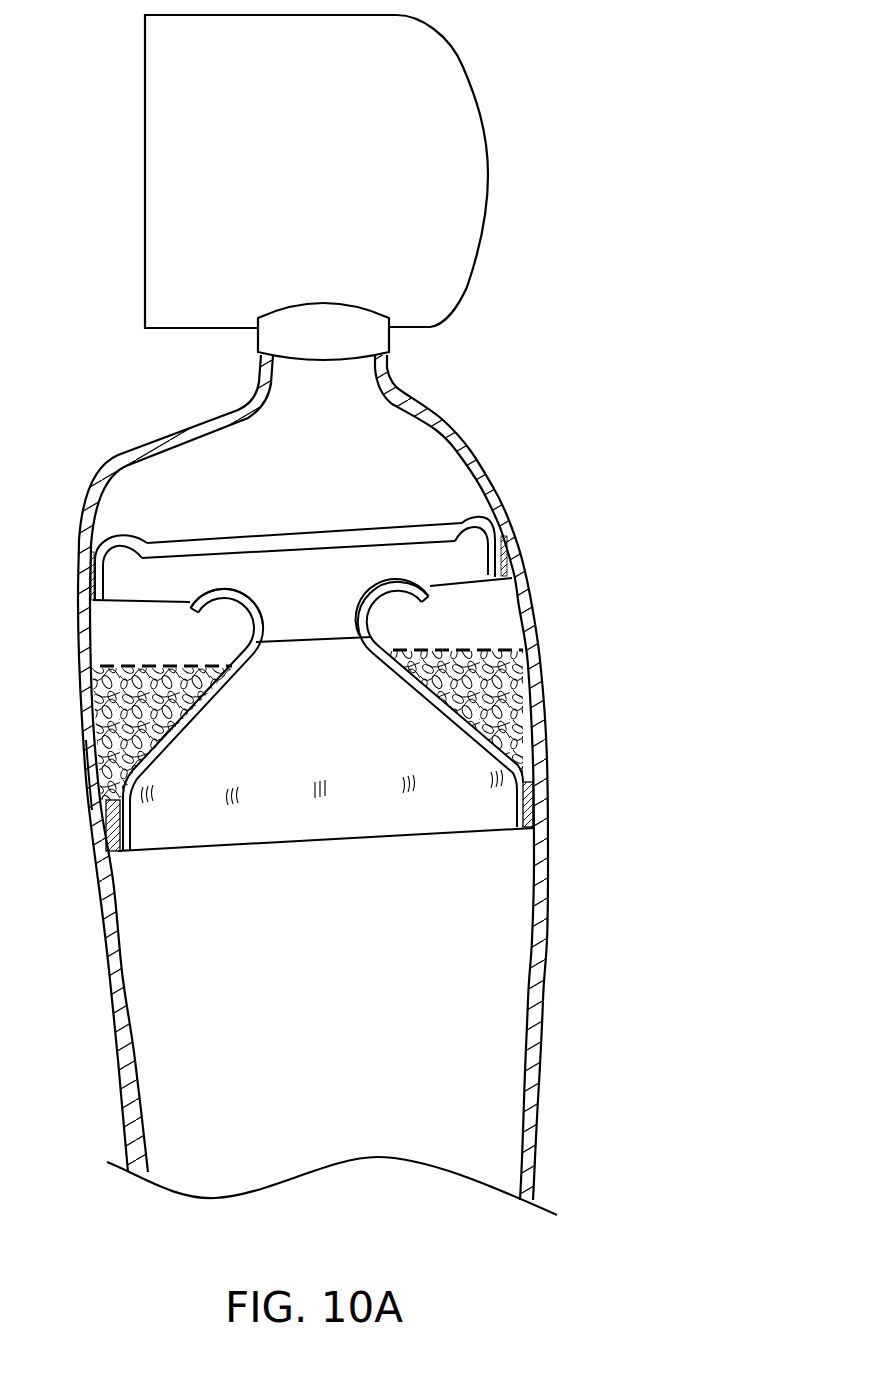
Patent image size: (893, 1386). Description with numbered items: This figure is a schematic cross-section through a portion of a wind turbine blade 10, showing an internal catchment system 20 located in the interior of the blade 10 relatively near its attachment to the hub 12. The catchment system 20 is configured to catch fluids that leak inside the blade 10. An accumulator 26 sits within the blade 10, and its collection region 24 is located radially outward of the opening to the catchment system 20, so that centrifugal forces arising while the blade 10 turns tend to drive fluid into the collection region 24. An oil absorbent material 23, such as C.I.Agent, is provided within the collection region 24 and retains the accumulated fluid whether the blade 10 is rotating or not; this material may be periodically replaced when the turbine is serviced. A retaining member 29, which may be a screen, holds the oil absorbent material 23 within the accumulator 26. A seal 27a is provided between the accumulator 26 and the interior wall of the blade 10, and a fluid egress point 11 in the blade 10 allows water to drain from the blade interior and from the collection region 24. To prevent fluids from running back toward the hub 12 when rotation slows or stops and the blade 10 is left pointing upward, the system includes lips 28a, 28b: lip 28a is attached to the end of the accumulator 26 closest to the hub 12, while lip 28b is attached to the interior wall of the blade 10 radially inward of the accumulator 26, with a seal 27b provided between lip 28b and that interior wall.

The turbine blade 10 is at (100, 935).
The fluid egress point 11 is at (92, 774).
The hub 12 is at (478, 265).
The catchment system 20 is at (320, 872).
The oil absorbent material 23 is at (146, 665).
The collection region 24 is at (150, 745).
The accumulator 26 is at (240, 652).
The seal 27a is at (110, 833).
The seal 27b is at (508, 552).
The lip 28a is at (378, 611).
The lip 28b is at (118, 536).
The retaining member 29 is at (493, 649).